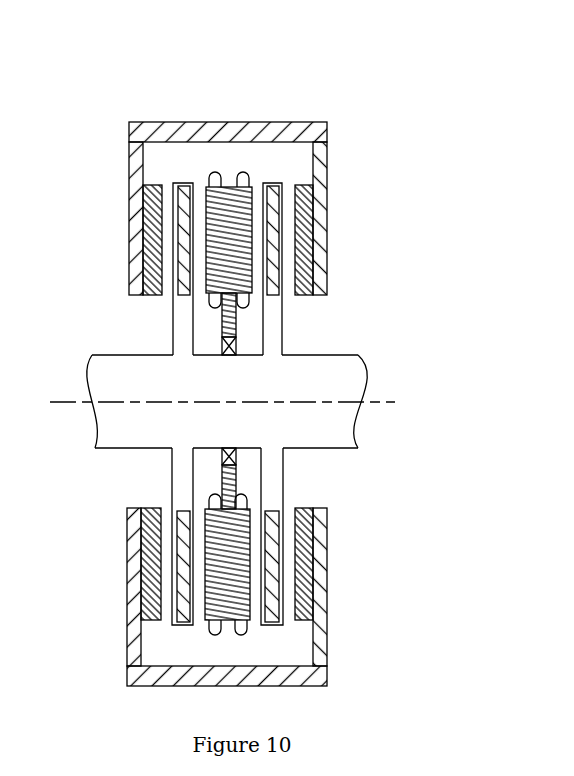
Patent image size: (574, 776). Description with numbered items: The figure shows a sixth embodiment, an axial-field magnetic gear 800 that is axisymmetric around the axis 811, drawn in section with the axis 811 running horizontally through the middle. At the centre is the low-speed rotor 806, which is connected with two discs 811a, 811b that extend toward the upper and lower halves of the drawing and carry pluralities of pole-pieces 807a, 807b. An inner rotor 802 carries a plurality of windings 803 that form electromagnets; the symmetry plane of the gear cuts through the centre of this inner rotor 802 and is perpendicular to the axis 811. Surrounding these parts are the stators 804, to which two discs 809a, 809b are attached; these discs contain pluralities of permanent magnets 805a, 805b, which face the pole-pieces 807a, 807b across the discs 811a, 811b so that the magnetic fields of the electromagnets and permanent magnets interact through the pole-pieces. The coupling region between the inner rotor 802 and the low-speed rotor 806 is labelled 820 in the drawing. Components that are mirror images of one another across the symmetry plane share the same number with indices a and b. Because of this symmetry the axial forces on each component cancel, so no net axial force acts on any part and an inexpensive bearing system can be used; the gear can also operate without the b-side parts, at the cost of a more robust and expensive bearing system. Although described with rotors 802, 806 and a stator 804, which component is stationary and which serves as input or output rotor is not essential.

The axial-field magnetic gear 800 is at (358, 470).
The inner rotor 802 is at (254, 205).
The windings 803 is at (221, 171).
The stators 804 is at (313, 122).
The permanent magnets 805a is at (152, 280).
The permanent magnets 805b is at (312, 273).
The low-speed rotor 806 is at (356, 371).
The pole-pieces 807a is at (183, 190).
The pole-pieces 807b is at (277, 191).
The disc 809a is at (128, 224).
The disc 809b is at (326, 231).
The axis 811 is at (375, 403).
The disc 811a is at (183, 311).
The disc 811b is at (278, 320).
The coupling block 820 is at (224, 454).